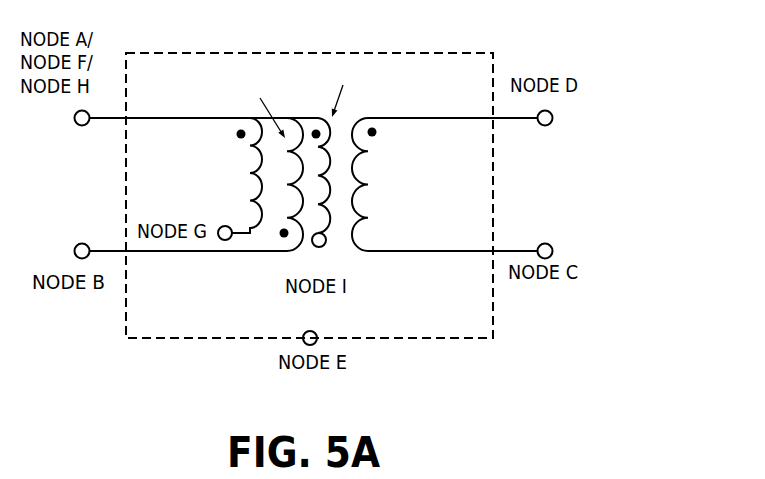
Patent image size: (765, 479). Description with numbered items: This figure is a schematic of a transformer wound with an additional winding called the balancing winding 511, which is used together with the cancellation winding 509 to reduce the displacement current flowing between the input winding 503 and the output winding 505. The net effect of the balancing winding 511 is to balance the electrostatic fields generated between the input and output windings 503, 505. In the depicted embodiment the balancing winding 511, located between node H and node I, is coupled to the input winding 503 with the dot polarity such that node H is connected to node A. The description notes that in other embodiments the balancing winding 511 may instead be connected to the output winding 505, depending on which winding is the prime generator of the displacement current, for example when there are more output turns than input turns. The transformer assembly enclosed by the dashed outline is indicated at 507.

The input winding 503 is at (185, 255).
The output winding 505 is at (438, 252).
The transformer 507 is at (222, 338).
The cancellation winding 509 is at (147, 184).
The balancing winding 511 is at (408, 53).